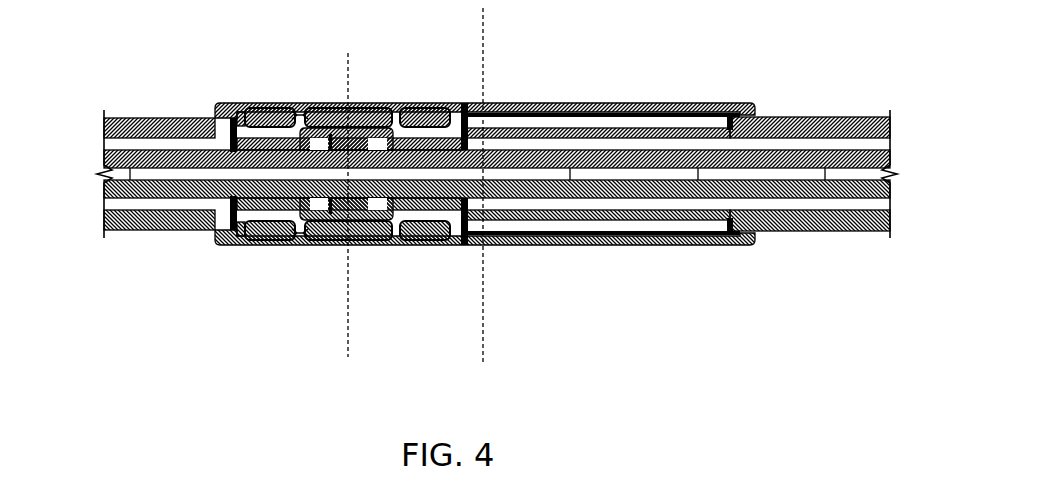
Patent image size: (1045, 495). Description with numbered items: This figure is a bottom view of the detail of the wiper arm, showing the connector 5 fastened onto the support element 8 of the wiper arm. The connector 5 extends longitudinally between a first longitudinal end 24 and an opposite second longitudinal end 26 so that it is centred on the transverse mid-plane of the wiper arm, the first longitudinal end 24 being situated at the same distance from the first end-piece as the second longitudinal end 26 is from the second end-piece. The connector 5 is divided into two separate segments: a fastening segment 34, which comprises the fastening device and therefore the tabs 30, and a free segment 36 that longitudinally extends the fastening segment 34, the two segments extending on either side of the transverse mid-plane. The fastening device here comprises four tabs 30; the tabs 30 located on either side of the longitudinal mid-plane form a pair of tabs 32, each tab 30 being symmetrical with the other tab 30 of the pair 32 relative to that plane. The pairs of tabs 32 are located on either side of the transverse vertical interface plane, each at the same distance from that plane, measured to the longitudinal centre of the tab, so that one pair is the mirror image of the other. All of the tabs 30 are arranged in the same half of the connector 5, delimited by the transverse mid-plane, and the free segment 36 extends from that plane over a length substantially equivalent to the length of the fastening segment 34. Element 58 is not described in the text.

The connector 5 is at (650, 250).
The support element 8 is at (857, 203).
The first longitudinal end 24 is at (221, 251).
The second longitudinal end 26 is at (755, 246).
The tab 30 is at (433, 142).
The pair of tabs 32 is at (237, 144).
The fastening segment 34 is at (483, 363).
The free segment 36 is at (755, 105).
The latching section 58 is at (270, 88).